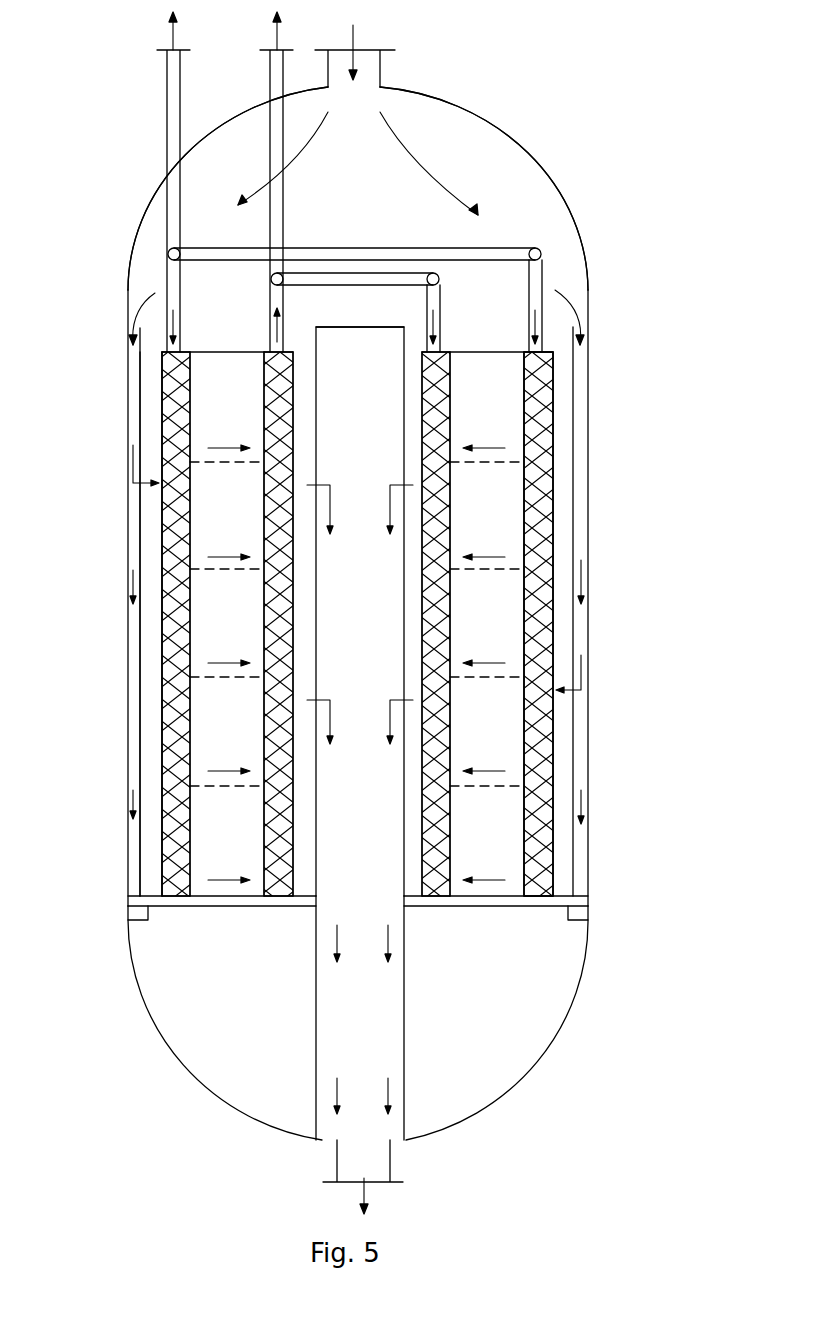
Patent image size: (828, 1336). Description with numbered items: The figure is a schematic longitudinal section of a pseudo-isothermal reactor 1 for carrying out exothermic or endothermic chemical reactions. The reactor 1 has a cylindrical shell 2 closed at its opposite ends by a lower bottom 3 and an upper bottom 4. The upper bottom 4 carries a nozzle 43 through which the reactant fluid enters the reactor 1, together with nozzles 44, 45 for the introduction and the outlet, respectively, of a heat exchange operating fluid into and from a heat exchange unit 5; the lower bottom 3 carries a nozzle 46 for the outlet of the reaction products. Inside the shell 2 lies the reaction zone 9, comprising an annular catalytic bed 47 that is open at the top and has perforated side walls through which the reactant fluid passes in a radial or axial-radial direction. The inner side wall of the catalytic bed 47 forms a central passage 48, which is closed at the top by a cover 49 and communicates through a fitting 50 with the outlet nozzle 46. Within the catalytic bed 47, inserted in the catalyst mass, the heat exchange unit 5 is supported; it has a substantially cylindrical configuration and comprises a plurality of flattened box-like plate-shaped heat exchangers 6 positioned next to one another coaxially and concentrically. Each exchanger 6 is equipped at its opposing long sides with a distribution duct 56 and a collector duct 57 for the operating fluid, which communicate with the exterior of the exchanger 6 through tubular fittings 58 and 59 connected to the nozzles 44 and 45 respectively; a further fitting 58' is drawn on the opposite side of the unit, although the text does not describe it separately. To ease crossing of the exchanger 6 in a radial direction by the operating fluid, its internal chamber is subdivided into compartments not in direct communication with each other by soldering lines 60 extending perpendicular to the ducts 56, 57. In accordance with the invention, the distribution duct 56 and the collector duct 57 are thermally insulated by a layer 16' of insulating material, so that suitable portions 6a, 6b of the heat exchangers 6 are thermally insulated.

The pseudo-isothermal reactor 1 is at (598, 126).
The cylindrical shell 2 is at (588, 378).
The lower bottom 3 is at (538, 1066).
The upper bottom 4 is at (500, 137).
The heat exchange unit 5 is at (550, 441).
The heat exchanger 6 is at (228, 398).
The portion of heat exchanger 6a is at (163, 628).
The portion of heat exchanger 6b is at (448, 655).
The reaction zone 9 is at (557, 528).
The layer of insulating material 16' is at (360, 624).
The nozzle 43 is at (380, 70).
The nozzle 44 is at (167, 104).
The nozzle 45 is at (270, 78).
The nozzle 46 is at (390, 1163).
The catalytic bed 47 is at (160, 553).
The passage 48 is at (382, 684).
The cover 49 is at (350, 328).
The fitting 50 is at (406, 1004).
The distribution duct 56 is at (548, 606).
The collector duct 57 is at (428, 790).
The tubular fitting 58 is at (287, 227).
The downcomer pipe 58' is at (592, 306).
The tubular fitting 59 is at (283, 212).
The soldering line 60 is at (232, 463).